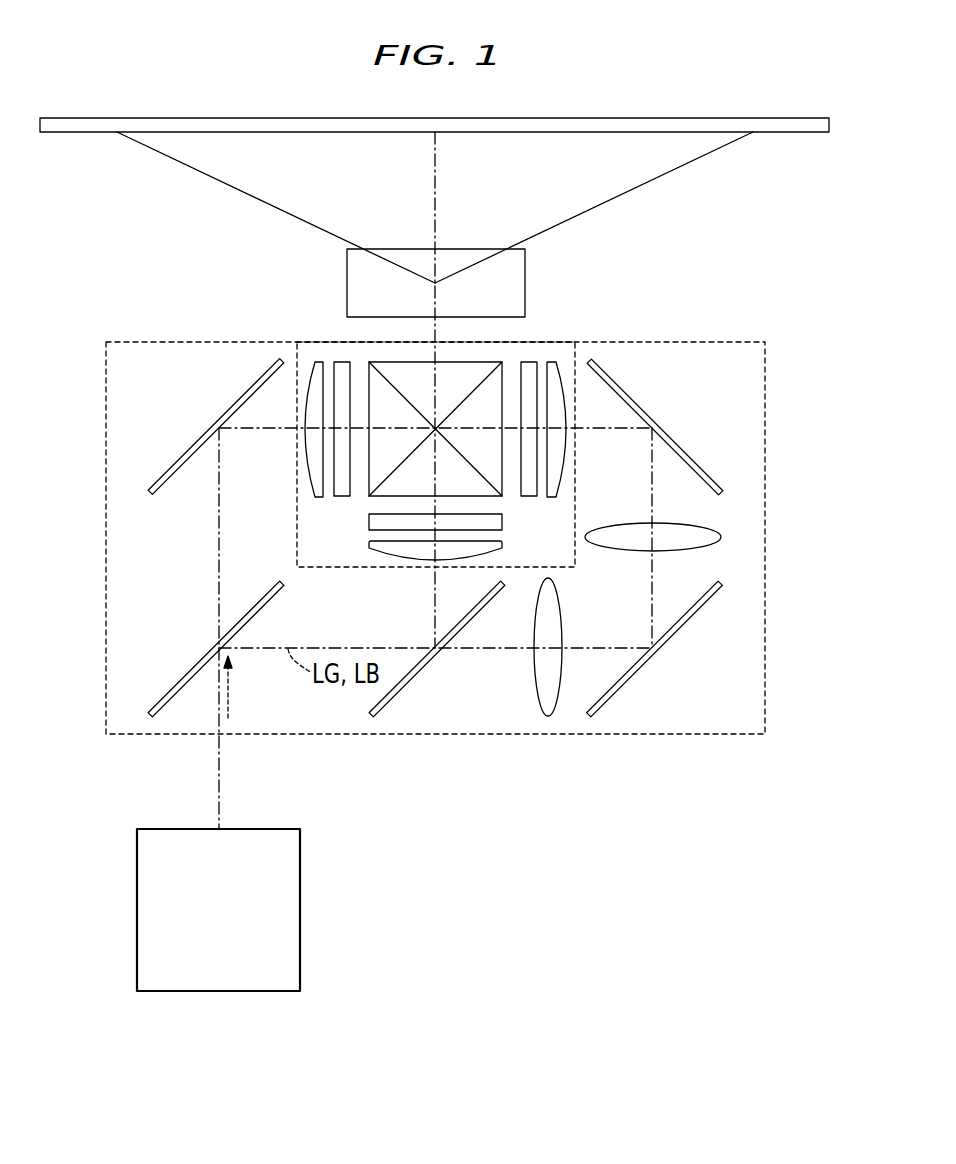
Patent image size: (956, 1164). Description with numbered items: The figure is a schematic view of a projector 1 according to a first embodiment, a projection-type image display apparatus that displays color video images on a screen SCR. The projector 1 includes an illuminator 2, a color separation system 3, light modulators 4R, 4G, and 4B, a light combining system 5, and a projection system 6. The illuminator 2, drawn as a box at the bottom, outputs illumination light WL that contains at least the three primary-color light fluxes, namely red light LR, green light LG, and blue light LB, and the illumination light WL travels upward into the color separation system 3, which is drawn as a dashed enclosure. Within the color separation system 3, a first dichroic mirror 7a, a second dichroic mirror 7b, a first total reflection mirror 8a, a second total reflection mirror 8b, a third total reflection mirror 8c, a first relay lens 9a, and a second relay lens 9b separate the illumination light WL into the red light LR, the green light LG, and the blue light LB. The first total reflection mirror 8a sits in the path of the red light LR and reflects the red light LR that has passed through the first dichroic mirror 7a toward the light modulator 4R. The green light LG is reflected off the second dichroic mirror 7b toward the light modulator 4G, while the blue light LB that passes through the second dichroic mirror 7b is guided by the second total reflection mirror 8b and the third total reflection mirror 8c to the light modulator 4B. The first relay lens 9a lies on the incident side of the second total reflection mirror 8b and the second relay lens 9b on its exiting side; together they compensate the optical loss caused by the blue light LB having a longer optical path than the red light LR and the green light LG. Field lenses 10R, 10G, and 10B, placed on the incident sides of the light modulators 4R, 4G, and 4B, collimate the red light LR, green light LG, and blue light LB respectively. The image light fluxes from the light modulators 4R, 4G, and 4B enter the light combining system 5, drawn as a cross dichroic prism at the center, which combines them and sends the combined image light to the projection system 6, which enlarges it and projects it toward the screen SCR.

The projector 1 is at (776, 316).
The illuminator 2 is at (300, 912).
The color separation system 3 is at (106, 483).
The light modulator 4R is at (342, 360).
The light modulator 4G is at (372, 522).
The light modulator 4B is at (530, 360).
The light combining system 5 is at (448, 370).
The projection system 6 is at (418, 265).
The first dichroic mirror 7a is at (180, 677).
The second dichroic mirror 7b is at (412, 680).
The first total reflection mirror 8a is at (193, 440).
The second total reflection mirror 8b is at (678, 632).
The third total reflection mirror 8c is at (680, 445).
The first relay lens 9a is at (533, 668).
The second relay lens 9b is at (710, 525).
The field lens 10R is at (320, 360).
The field lens 10G is at (375, 547).
The field lens 10B is at (550, 360).
The screen SCR is at (797, 133).
The illumination light WL is at (232, 700).
The red light LR is at (219, 565).
The green light LG is at (435, 603).
The blue light LB is at (652, 592).